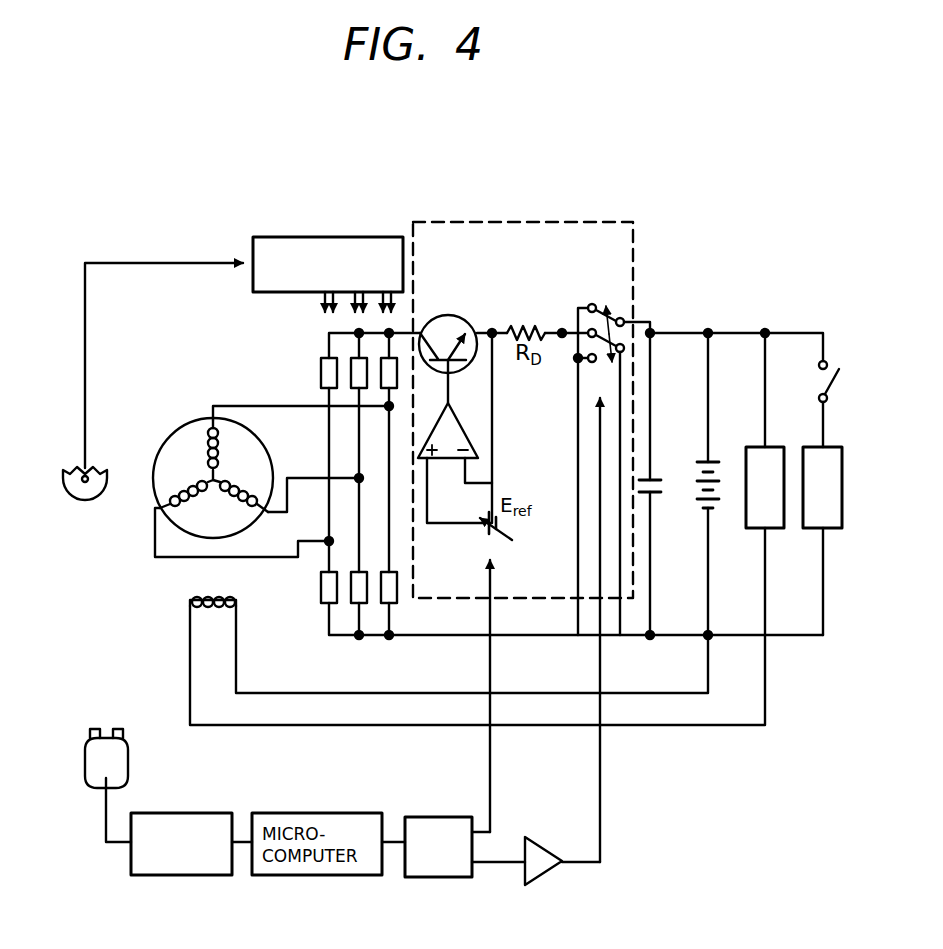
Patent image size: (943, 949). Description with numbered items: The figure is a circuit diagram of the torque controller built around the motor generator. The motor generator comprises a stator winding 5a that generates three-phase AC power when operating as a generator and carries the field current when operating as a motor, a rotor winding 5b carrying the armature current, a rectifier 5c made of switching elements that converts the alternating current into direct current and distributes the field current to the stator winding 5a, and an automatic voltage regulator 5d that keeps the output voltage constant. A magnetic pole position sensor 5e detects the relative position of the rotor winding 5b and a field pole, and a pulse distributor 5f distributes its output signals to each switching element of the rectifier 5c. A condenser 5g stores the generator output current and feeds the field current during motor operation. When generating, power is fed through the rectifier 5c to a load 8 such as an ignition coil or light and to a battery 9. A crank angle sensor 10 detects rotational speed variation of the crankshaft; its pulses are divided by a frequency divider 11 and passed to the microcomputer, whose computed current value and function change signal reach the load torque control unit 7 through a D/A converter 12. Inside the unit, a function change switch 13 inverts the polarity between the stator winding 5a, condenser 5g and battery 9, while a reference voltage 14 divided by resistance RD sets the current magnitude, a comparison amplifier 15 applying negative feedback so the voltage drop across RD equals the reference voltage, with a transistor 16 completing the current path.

The stator winding 5a is at (164, 450).
The rotor winding 5b is at (190, 604).
The rectifier 5c is at (344, 612).
The automatic voltage regulator 5d is at (752, 447).
The magnetic pole position sensor 5e is at (66, 493).
The pulse distributor 5f is at (295, 237).
The condenser 5g is at (666, 495).
The load torque control unit 7 is at (455, 222).
The load 8 is at (810, 447).
The battery 9 is at (722, 498).
The crank angle sensor 10 is at (128, 732).
The frequency divider 11 is at (210, 813).
The D/A converter 12 is at (447, 817).
The function change switch 13 is at (600, 300).
The reference voltage 14 is at (498, 538).
The comparison amplifier 15 is at (468, 430).
The transistor 16 is at (448, 316).